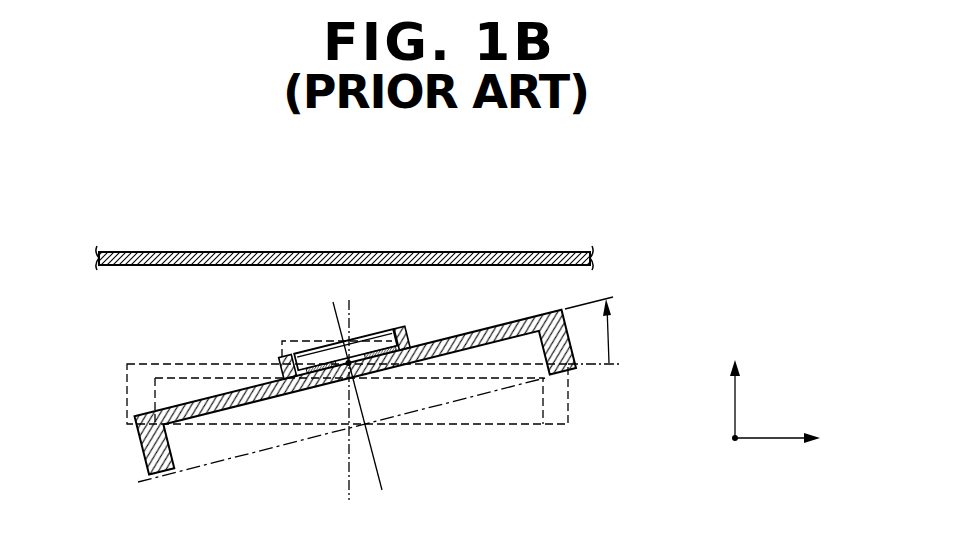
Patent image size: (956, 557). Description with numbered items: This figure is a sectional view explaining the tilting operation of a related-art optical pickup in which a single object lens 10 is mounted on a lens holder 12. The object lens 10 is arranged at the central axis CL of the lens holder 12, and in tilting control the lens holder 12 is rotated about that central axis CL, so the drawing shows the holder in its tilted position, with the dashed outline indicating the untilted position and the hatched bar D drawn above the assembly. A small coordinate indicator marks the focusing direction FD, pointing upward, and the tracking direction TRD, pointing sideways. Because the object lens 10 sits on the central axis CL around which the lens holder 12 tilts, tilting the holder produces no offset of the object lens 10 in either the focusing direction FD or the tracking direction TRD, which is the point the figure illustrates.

The object lens 10 is at (394, 328).
The lens holder 12 is at (153, 452).
The disk / recording medium D is at (527, 252).
The central axis CL is at (341, 400).
The focusing direction FD is at (734, 385).
The tracking direction TRD is at (801, 438).